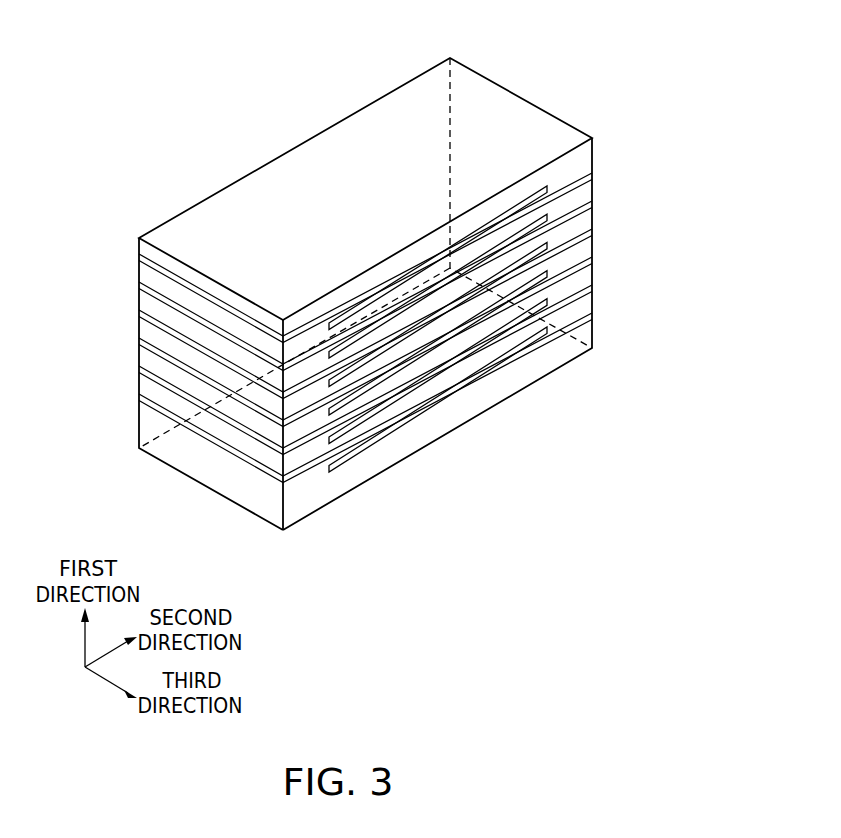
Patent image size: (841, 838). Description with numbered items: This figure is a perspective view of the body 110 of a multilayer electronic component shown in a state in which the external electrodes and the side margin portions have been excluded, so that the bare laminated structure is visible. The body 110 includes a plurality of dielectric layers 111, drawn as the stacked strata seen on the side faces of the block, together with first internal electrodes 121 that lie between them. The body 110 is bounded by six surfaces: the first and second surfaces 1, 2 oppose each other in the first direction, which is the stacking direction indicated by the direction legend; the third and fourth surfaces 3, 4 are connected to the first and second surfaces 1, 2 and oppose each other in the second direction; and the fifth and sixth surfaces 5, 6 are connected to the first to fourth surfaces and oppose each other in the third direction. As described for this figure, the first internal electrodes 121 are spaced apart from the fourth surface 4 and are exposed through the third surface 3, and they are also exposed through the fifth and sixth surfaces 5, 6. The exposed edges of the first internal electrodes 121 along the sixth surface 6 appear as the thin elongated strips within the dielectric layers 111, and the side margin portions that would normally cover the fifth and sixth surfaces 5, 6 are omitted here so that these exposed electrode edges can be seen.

The first surface 1 is at (338, 281).
The second surface 2 is at (395, 96).
The third surface 3 is at (192, 450).
The fourth surface 4 is at (528, 121).
The fifth surface 5 is at (218, 185).
The sixth surface 6 is at (556, 360).
The body 110 is at (338, 281).
The dielectric layer 111 is at (165, 319).
The first internal electrode 121 is at (165, 286).